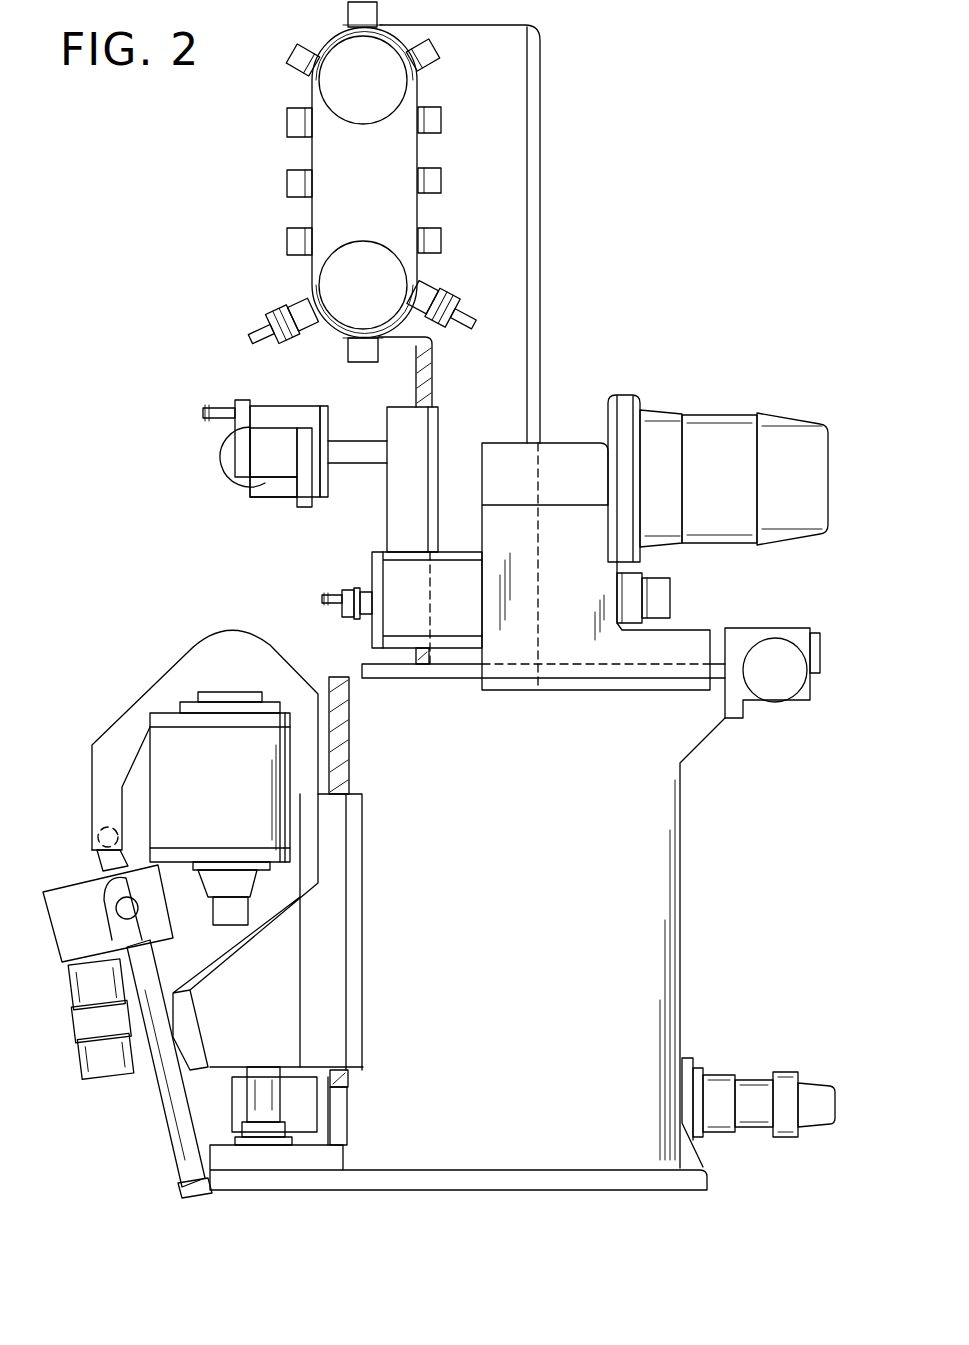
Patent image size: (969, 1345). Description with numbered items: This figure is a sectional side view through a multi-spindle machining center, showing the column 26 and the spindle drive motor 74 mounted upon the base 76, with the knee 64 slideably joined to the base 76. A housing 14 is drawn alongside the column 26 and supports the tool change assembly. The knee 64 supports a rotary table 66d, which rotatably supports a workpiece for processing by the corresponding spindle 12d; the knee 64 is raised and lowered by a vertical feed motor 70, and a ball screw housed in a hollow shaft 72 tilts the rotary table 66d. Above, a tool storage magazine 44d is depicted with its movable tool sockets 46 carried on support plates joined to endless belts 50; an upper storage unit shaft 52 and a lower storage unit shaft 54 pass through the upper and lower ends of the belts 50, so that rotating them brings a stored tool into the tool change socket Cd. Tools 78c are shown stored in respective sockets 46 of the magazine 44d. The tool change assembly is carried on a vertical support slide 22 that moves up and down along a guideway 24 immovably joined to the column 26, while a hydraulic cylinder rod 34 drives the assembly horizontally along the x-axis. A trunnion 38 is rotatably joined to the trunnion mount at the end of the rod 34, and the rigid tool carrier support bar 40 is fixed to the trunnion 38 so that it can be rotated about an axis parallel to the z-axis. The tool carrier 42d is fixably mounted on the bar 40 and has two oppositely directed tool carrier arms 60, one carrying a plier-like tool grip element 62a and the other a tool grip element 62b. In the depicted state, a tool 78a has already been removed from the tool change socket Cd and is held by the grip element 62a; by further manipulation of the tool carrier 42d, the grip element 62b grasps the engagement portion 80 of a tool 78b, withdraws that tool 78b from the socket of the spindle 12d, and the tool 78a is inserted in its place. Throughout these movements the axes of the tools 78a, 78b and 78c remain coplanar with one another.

The spindle 12d is at (372, 567).
The housing 14 is at (448, 558).
The vertical support slide 22 is at (433, 420).
The guideway 24 is at (420, 374).
The column 26 is at (542, 224).
The hydraulic cylinder rod 34 is at (355, 453).
The trunnion 38 is at (243, 488).
The tool carrier support bar 40 is at (266, 484).
The tool carrier 42d is at (212, 482).
The tool storage magazine 44d is at (441, 122).
The tool socket 46 is at (287, 122).
The endless belt 50 is at (312, 152).
The upper storage unit shaft 52 is at (380, 87).
The lower storage unit shaft 54 is at (380, 295).
The tool carrier arm 60 is at (306, 443).
The tool grip element 62a is at (243, 400).
The tool grip element 62b is at (304, 503).
The knee 64 is at (108, 773).
The rotary table 66d is at (218, 692).
The vertical feed motor 70 is at (752, 1085).
The hollow shaft 72 is at (172, 1128).
The spindle drive motor 74 is at (715, 425).
The base 76 is at (665, 812).
The tool 78a is at (217, 406).
The tool 78b is at (322, 598).
The tool 78c is at (280, 303).
The engagement portion 80 is at (353, 613).
The tool change socket Cd is at (350, 350).